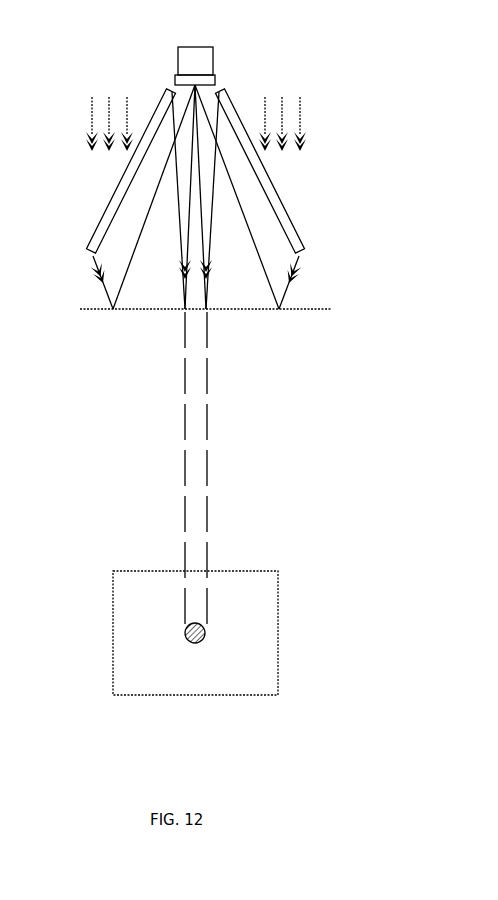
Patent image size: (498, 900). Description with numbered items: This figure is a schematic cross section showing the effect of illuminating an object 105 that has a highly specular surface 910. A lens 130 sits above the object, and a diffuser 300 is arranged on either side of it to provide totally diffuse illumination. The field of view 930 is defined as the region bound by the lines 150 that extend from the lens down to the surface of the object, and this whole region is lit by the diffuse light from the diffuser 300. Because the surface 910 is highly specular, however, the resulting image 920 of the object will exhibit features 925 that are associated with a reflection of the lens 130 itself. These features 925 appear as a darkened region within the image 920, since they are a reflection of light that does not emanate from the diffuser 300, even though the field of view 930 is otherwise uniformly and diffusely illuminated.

The lens 130 is at (215, 59).
The diffuser 300 is at (102, 213).
The lines 150 is at (139, 238).
The object 105 is at (133, 311).
The highly specular surface 910 is at (330, 287).
The resulting image 920 is at (245, 540).
The field of view 930 is at (277, 597).
The features 925 is at (205, 633).